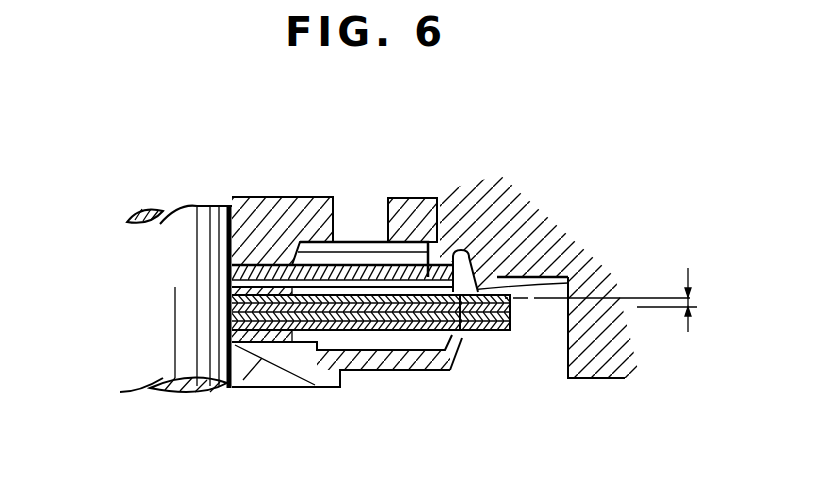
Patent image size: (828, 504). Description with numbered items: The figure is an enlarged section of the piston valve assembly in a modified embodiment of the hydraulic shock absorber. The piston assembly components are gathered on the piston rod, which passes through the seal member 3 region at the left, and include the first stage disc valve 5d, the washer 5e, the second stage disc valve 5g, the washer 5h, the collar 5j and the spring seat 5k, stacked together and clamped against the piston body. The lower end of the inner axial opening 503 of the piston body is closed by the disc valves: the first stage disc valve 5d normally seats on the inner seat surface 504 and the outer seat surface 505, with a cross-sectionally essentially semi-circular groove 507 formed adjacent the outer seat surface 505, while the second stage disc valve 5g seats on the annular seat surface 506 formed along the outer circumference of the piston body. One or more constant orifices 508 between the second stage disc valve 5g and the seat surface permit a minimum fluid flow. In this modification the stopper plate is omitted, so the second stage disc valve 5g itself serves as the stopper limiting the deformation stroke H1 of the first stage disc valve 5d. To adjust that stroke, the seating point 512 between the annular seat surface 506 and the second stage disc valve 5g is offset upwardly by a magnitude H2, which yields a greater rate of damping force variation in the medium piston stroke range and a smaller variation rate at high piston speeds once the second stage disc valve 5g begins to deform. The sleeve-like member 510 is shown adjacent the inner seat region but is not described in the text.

The seal member 3 is at (165, 249).
The first stage disc valve 5d is at (232, 267).
The washer 5e is at (240, 296).
The second stage disc valve 5g is at (233, 316).
The washer 5h is at (233, 334).
The collar 5j is at (243, 382).
The spring seat 5k is at (395, 358).
The inner axial opening 503 is at (366, 236).
The inner seat surface 504 is at (282, 262).
The outer seat surface 505 is at (497, 277).
The annular seat surface 506 is at (497, 337).
The semi-circular groove 507 is at (464, 250).
The constant orifice 508 is at (570, 275).
The sleeve 510 is at (327, 245).
The seating point 512 is at (458, 338).
The deformation stroke H1 is at (428, 248).
The upward offset magnitude H2 is at (617, 300).